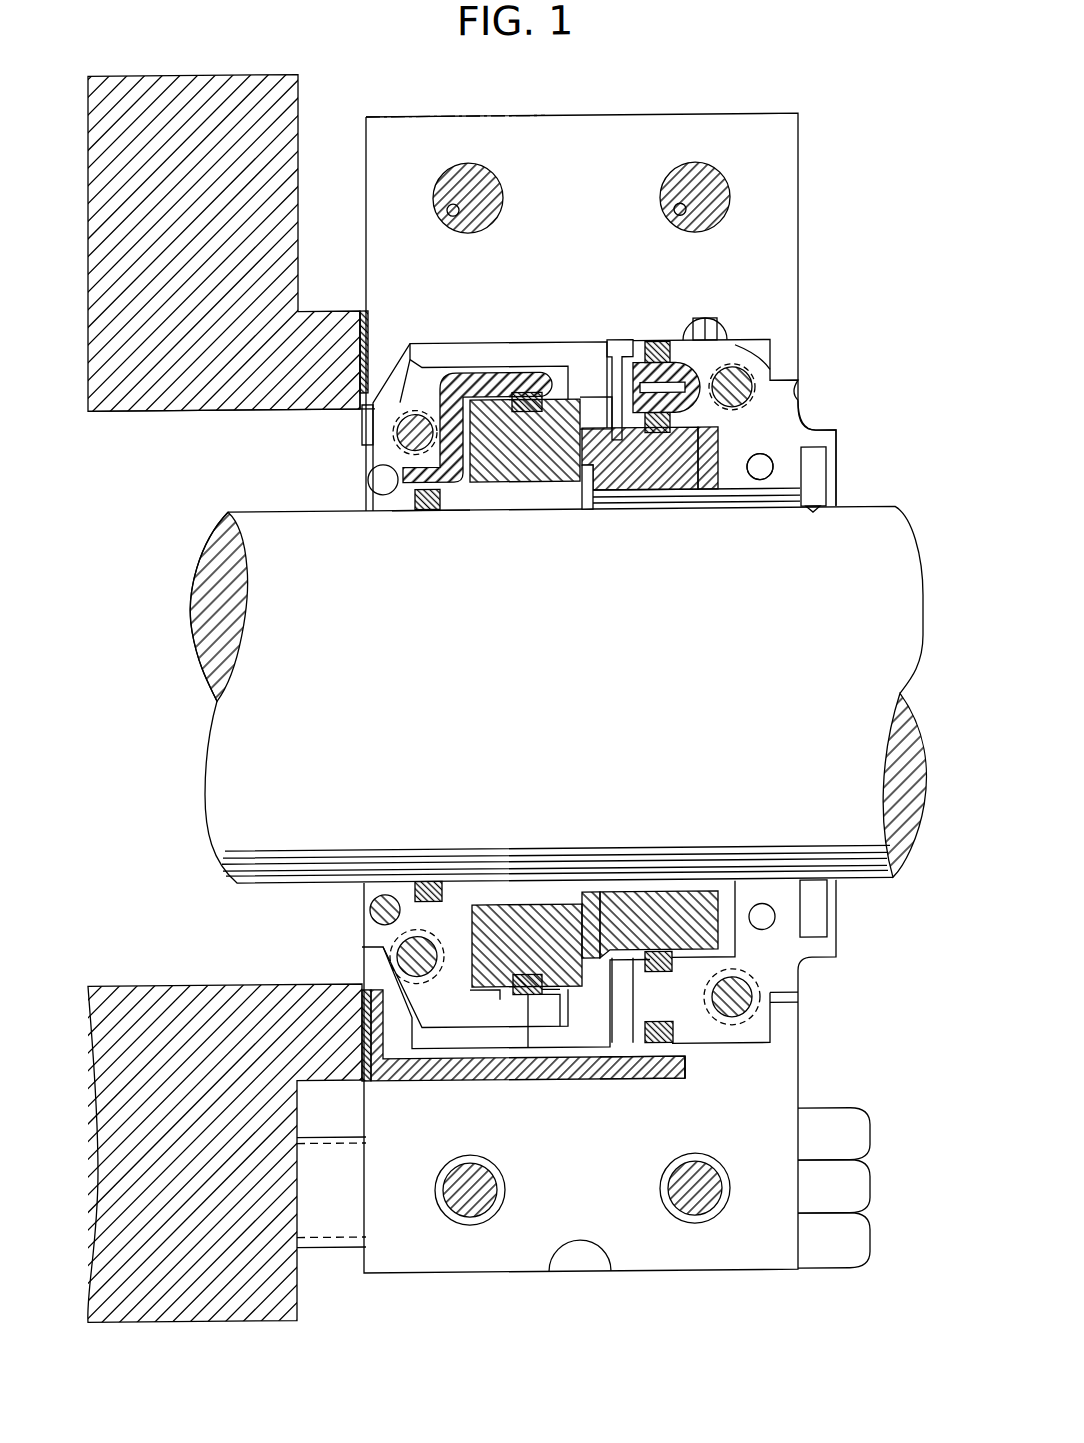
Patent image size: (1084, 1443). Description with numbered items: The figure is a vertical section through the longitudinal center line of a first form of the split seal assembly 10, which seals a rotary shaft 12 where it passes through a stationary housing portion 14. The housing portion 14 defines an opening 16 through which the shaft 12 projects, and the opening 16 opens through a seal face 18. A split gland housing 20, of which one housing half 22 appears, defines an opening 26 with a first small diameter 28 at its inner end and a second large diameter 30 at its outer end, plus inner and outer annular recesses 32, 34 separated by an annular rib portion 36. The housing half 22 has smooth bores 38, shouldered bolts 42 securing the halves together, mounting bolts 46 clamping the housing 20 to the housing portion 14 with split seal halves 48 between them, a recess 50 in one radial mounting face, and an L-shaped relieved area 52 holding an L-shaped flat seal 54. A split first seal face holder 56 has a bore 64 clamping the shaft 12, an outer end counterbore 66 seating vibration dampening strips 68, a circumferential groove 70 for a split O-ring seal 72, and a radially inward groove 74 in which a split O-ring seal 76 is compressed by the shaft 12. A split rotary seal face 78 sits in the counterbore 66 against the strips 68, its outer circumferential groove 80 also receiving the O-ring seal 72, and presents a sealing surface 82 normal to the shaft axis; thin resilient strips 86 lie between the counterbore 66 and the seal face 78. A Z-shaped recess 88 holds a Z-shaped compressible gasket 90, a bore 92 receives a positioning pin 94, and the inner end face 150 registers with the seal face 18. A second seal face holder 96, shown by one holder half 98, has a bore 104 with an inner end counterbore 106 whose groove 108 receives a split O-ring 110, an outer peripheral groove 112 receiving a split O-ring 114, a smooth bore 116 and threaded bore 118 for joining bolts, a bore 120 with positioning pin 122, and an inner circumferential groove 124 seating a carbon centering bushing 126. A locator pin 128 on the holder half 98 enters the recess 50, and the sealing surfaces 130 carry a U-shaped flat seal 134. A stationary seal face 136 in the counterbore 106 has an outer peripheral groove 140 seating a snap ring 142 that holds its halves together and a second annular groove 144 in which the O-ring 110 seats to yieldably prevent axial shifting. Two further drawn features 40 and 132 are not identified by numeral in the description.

The split seal assembly 10 is at (663, 107).
The rotary shaft 12 is at (210, 727).
The stationary housing portion 14 is at (120, 394).
The opening 16 is at (208, 411).
The seal face 18 is at (366, 345).
The split gland housing 20 is at (545, 117).
The housing half 22 is at (800, 164).
The opening 26 is at (372, 460).
The first small diameter 28 is at (362, 430).
The second large diameter 30 is at (800, 396).
The inner end annular recess 32 is at (492, 342).
The outer end annular recess 34 is at (735, 363).
The annular rib portion 36 is at (620, 341).
The smooth bores 38 is at (435, 201).
The mounting bolt 40 is at (443, 1193).
The shouldered bolts 42 is at (480, 196).
The mounting bolts 46 is at (830, 1124).
The split seal halves 48 is at (364, 345).
The recess 50 is at (705, 321).
The L-shaped relieved area 52 is at (455, 1083).
The L-shaped flat seal 54 is at (651, 1083).
The first seal face holder 56 is at (375, 495).
The bore 64 is at (386, 513).
The outer end counterbore 66 is at (462, 374).
The vibration dampening strips 68 is at (492, 485).
The circumferential groove 70 is at (524, 998).
The split O-ring seal 72 is at (530, 1051).
The circumferential groove 74 is at (446, 906).
The split O-ring seal 76 is at (428, 880).
The rotary seal face 78 is at (514, 904).
The outer circumferential groove 80 is at (548, 991).
The sealing surface 82 is at (612, 894).
The thin resilient strips 86 is at (495, 991).
The Z-shaped recess 88 is at (438, 511).
The Z-shaped compressible gasket 90 is at (408, 512).
The bore 92 is at (372, 512).
The positioning pin 94 is at (400, 940).
The second seal face holder 96 is at (838, 433).
The holder half 98 is at (805, 417).
The bore 104 is at (808, 883).
The inner end counterbore 106 is at (718, 938).
The circumferential groove 108 is at (655, 977).
The split O-ring 110 is at (622, 957).
The outer peripheral groove 112 is at (670, 1033).
The split O-ring 114 is at (688, 1075).
The smooth bore 116 is at (750, 1008).
The threaded bore 118 is at (752, 388).
The bore 120 is at (760, 485).
The positioning pin 122 is at (763, 457).
The inner circumferential groove 124 is at (827, 473).
The carbon centering bushing 126 is at (815, 514).
The locator pin 128 is at (690, 321).
The sealing surfaces 130 is at (715, 333).
The O-ring 132 is at (657, 344).
The U-shaped flat seal 134 is at (640, 372).
The stationary seal face 136 is at (600, 494).
The outer peripheral groove 140 is at (630, 507).
The snap ring 142 is at (600, 399).
The second annular groove 144 is at (695, 495).
The inner end face 150 is at (397, 452).